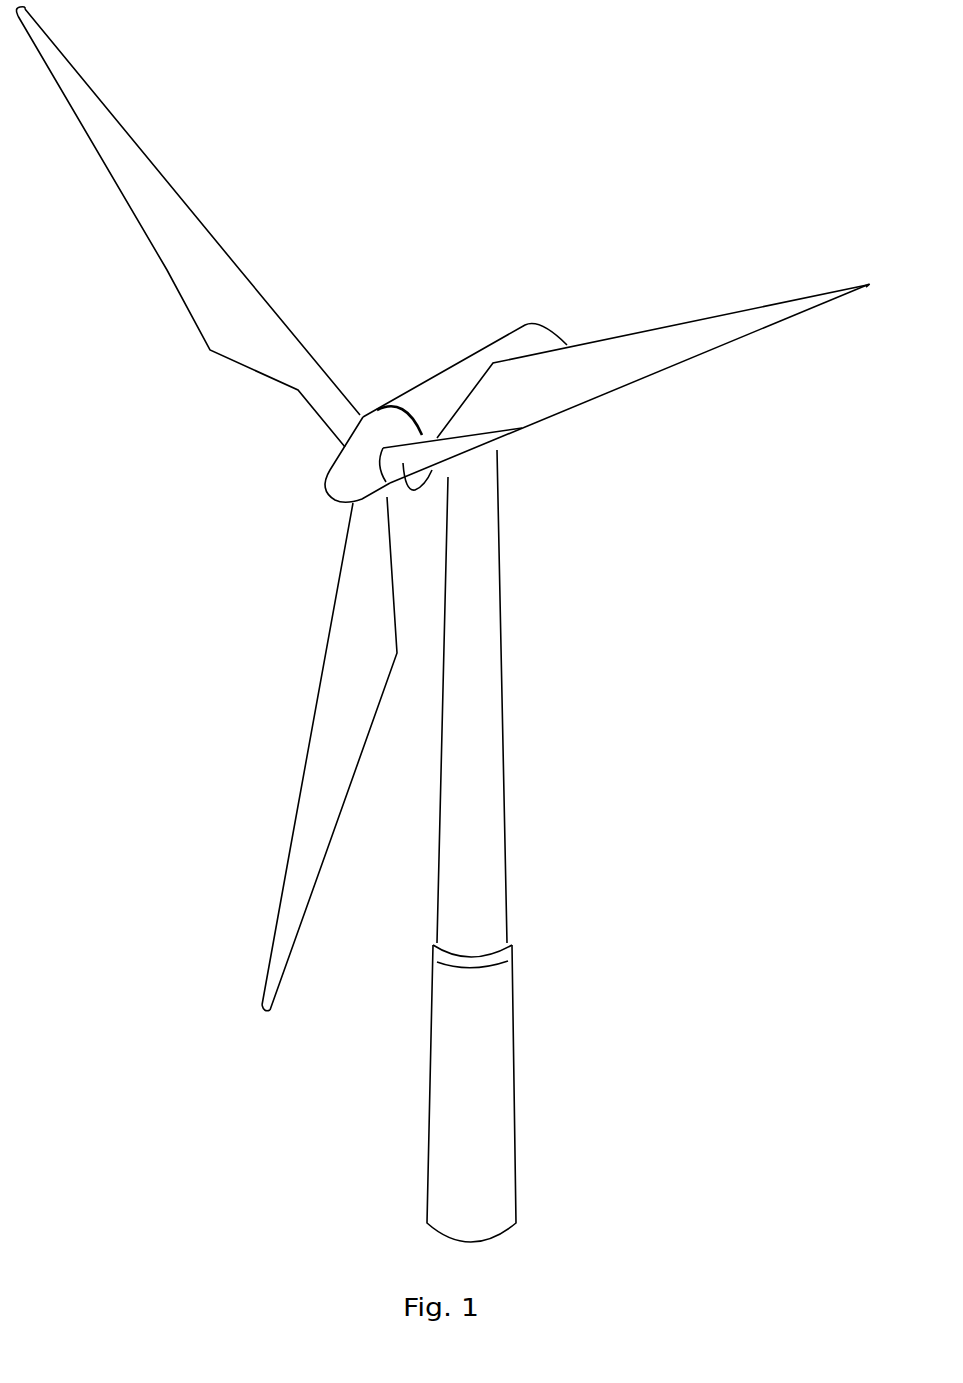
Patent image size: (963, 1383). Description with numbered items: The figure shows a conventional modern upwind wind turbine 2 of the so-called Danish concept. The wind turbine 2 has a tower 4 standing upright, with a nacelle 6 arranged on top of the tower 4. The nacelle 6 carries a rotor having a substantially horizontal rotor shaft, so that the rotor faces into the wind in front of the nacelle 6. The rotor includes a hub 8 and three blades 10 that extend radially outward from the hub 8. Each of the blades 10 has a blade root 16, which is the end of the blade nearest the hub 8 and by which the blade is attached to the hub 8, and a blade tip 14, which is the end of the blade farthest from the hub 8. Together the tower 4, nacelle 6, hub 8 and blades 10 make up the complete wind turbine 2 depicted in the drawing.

The wind turbine 2 is at (602, 780).
The tower 4 is at (490, 698).
The nacelle 6 is at (437, 388).
The hub 8 is at (340, 477).
The blades 10 is at (226, 322).
The blade tip 14 is at (66, 72).
The blade root 16 is at (348, 428).